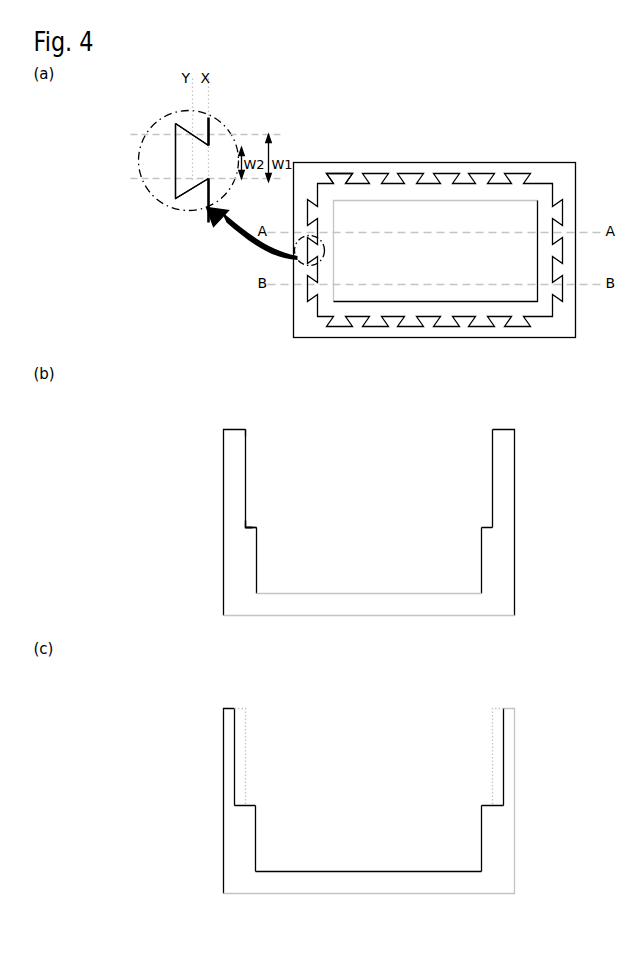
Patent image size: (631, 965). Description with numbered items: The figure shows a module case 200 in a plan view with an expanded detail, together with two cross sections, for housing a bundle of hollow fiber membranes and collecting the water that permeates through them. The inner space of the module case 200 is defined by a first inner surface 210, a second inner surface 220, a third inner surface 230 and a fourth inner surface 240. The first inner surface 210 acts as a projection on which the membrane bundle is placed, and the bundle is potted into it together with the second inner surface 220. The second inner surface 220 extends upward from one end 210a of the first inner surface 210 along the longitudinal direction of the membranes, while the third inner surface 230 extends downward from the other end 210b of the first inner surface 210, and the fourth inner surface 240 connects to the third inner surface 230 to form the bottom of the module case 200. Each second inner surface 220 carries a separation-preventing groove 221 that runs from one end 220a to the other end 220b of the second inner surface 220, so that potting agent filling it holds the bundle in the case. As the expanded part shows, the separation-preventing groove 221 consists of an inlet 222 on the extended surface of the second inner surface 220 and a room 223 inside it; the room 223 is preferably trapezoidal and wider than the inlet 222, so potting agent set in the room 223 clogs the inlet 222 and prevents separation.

The module case 200 is at (165, 148).
The first inner surface 210 is at (390, 195).
The one end of the first inner surface 210a is at (245, 527).
The other end of the first inner surface 210b is at (256, 527).
The second inner surface 220 is at (213, 121).
The one end of the second inner surface 220a is at (193, 506).
The other end of the second inner surface 220b is at (245, 429).
The separation-preventing groove 221 is at (173, 229).
The inlet 222 is at (201, 172).
The room 223 is at (183, 169).
The third inner surface 230 is at (499, 190).
The fourth inner surface 240 is at (480, 268).